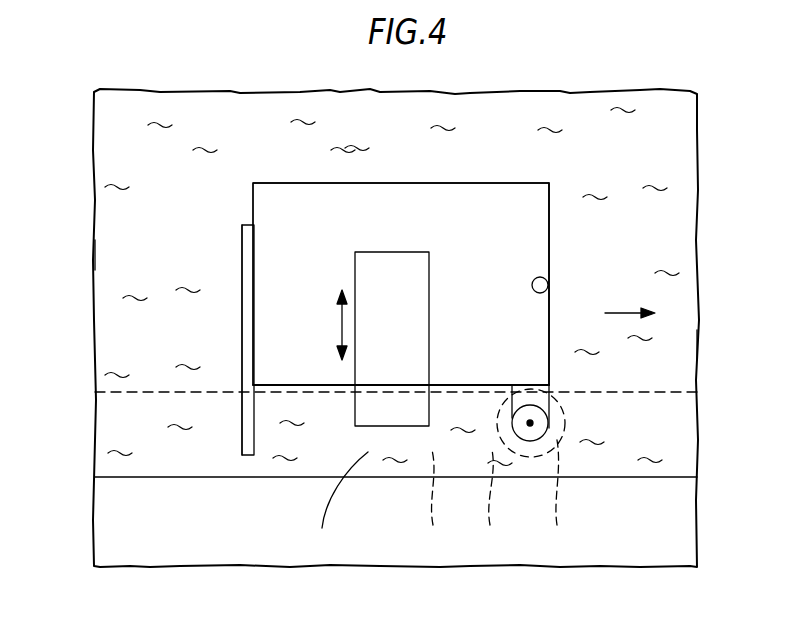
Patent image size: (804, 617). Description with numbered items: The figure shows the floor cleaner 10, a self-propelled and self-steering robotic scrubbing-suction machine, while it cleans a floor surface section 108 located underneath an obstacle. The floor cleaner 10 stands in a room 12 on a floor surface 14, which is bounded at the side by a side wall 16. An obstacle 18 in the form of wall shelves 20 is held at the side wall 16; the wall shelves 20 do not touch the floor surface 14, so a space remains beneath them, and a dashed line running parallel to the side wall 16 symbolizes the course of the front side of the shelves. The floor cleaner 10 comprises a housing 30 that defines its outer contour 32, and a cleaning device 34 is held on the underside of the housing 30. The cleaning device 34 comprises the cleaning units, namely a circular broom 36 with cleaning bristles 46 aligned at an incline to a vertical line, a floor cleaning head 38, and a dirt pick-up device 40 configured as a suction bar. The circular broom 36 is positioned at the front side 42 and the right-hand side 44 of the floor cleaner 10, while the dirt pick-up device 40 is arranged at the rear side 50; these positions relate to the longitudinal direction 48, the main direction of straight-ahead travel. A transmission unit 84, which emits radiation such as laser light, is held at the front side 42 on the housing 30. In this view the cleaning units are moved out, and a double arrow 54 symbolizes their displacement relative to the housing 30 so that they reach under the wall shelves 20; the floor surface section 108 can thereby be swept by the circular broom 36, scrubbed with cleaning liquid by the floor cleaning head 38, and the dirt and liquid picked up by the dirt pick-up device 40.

The floor cleaner 10 is at (558, 178).
The room 12 is at (143, 250).
The floor surface 14 is at (685, 345).
The side wall 16 is at (620, 478).
The obstacle 18 is at (438, 504).
The wall shelves 20 is at (496, 504).
The housing 30 is at (466, 200).
The outer contour 32 is at (456, 385).
The cleaning device 34 is at (568, 413).
The circular broom 36 is at (530, 412).
The floor cleaning head 38 is at (413, 292).
The dirt pick-up device 40 is at (254, 268).
The front side 42 is at (549, 222).
The right-hand side 44 is at (322, 386).
The cleaning bristles 46 is at (560, 499).
The longitudinal direction 48 is at (615, 312).
The rear side 50 is at (253, 335).
The double arrow 54 is at (341, 325).
The transmission unit 84 is at (536, 278).
The floor surface section 108 is at (375, 445).